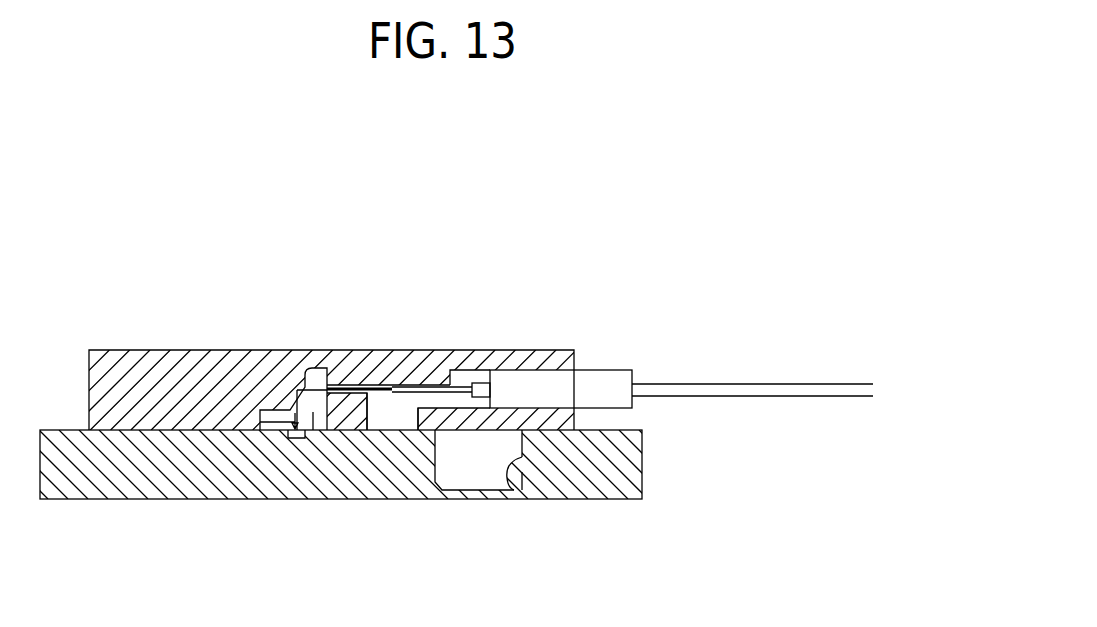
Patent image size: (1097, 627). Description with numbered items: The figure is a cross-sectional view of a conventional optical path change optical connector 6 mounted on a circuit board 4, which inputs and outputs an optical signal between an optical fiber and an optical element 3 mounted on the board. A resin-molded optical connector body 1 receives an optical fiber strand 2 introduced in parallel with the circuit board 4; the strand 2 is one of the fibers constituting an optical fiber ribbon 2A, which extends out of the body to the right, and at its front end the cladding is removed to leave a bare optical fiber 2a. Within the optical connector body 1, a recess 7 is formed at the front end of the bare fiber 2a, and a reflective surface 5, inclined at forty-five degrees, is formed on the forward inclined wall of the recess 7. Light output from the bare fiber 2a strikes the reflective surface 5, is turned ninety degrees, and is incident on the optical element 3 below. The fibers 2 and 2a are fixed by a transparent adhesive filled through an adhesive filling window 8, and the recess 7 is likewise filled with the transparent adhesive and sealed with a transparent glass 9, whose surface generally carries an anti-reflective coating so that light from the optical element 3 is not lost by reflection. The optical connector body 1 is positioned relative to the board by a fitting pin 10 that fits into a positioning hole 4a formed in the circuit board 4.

The optical connector body 1 is at (178, 350).
The optical fiber strand 2 is at (421, 387).
The optical fiber (bare fiber) 2a is at (352, 386).
The optical fiber ribbon 2A is at (762, 386).
The optical element 3 is at (292, 438).
The circuit board 4 is at (120, 490).
The positioning hole 4a is at (510, 467).
The reflective surface 5 is at (320, 378).
The optical path change optical connector 6 is at (500, 258).
The recess 7 is at (313, 412).
The adhesive filling window 8 is at (393, 420).
The transparent glass 9 is at (275, 430).
The fitting pin 10 is at (476, 480).